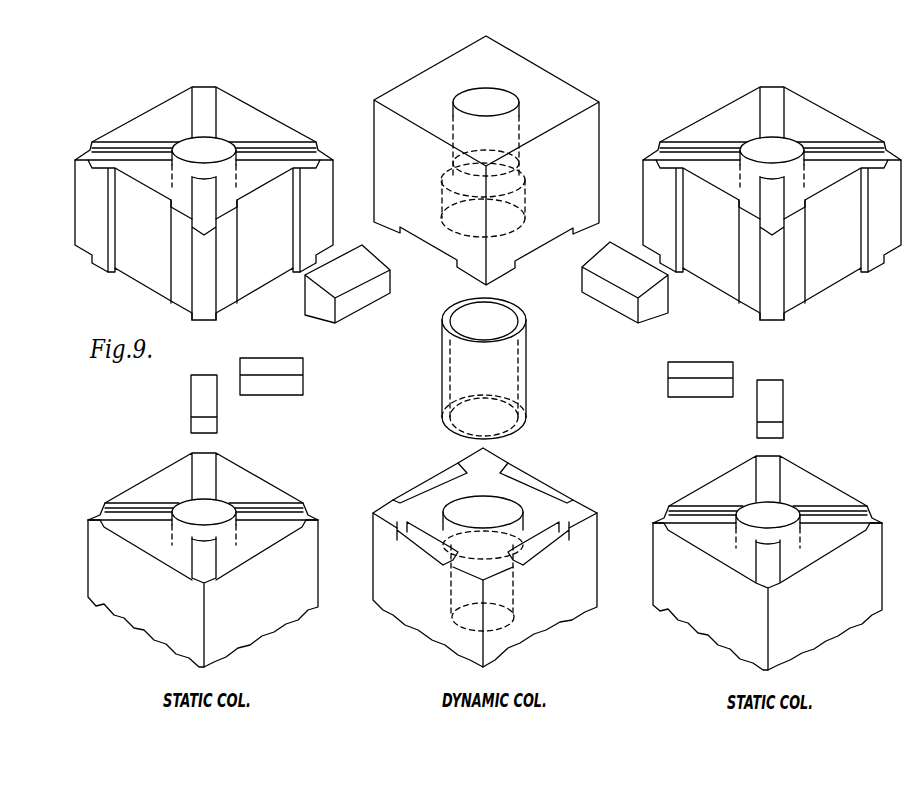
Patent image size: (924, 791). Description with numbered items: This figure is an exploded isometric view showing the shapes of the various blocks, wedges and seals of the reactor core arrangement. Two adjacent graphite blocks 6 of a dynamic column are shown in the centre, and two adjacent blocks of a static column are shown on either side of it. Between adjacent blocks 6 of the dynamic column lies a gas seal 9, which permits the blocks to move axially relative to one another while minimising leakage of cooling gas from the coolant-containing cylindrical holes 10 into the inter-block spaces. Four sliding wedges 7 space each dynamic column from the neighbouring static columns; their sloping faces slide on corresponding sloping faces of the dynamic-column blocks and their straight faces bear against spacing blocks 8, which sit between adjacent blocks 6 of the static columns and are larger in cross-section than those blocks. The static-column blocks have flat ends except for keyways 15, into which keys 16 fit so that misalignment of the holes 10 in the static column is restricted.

The graphite block 6 is at (588, 128).
The sliding wedge 7 is at (368, 297).
The spacing block 8 is at (723, 113).
The gas seal 9 is at (527, 358).
The cylindrical hole 10 is at (510, 507).
The keyway 15 is at (205, 100).
The key 16 is at (298, 368).